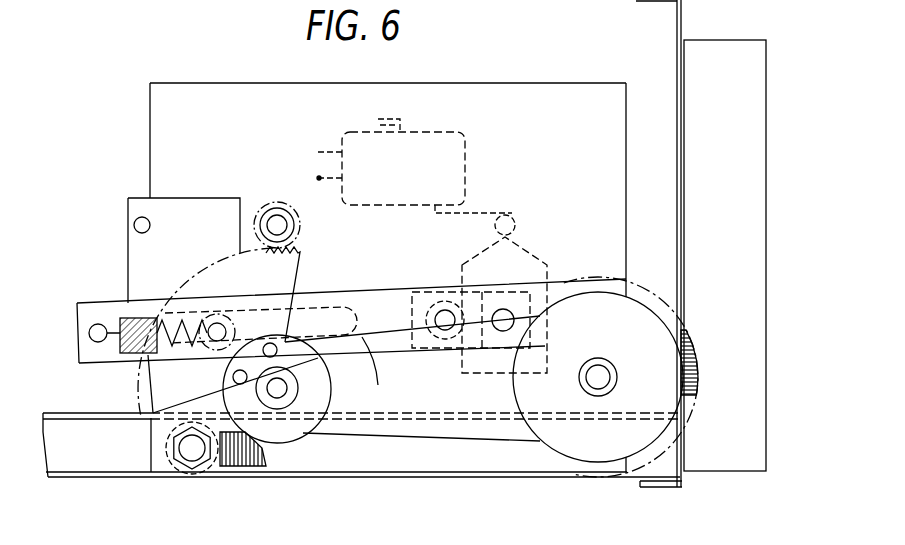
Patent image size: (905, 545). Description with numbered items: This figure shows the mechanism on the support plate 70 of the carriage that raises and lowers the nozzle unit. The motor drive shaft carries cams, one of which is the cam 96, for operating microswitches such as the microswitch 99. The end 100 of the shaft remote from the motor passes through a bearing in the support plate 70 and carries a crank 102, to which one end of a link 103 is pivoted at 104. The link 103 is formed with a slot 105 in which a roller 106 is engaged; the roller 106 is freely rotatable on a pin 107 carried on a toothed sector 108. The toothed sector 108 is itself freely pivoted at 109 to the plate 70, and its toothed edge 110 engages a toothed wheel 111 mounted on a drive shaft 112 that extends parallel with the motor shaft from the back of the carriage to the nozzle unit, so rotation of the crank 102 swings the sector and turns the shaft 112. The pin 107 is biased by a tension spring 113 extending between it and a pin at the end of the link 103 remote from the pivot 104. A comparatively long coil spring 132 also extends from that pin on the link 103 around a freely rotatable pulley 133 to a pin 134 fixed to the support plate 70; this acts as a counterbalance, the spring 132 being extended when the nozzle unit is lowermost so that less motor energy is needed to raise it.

The support plate 70 is at (212, 96).
The cam 96 is at (532, 252).
The microswitch 99 is at (452, 150).
The end of the shaft 100 is at (503, 333).
The crank 102 is at (493, 296).
The link 103 is at (328, 297).
The pivot 104 is at (443, 338).
The slot 105 is at (401, 378).
The roller 106 is at (227, 316).
The pin 107 is at (210, 352).
The toothed sector 108 is at (196, 283).
The pivot 109 is at (282, 388).
The toothed edge 110 is at (213, 266).
The toothed wheel 111 is at (301, 224).
The drive shaft 112 is at (277, 214).
The tension spring 113 is at (141, 368).
The coil spring 132 is at (596, 283).
The pulley 133 is at (623, 342).
The pin 134 is at (185, 449).